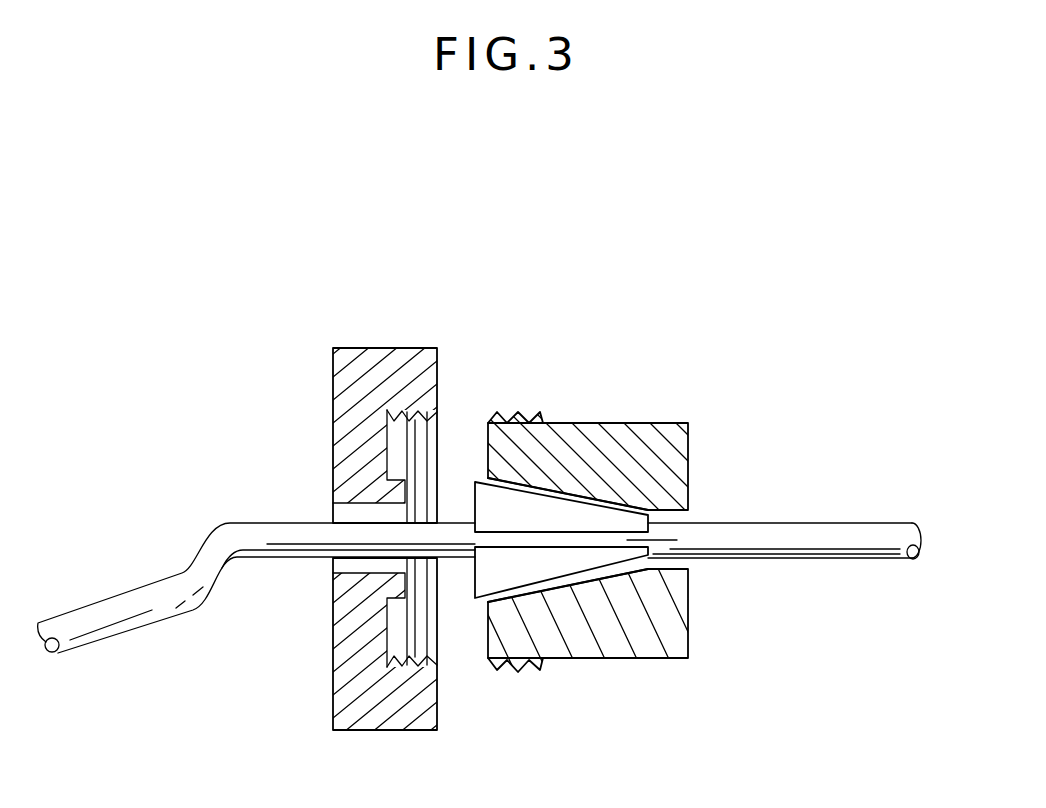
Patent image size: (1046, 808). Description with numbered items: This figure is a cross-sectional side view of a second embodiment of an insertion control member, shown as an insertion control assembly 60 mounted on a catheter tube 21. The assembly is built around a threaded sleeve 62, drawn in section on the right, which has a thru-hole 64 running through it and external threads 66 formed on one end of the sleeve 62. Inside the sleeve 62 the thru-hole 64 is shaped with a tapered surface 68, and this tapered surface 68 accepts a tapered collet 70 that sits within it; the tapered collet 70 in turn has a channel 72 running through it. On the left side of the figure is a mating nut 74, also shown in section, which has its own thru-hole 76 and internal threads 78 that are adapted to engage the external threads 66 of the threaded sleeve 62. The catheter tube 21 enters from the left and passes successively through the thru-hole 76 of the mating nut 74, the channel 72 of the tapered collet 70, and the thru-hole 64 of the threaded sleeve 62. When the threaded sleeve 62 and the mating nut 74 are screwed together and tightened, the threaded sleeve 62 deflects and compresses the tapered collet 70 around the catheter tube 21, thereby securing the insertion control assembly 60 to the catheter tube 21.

The catheter tube 21 is at (275, 543).
The insertion control assembly 60 is at (484, 272).
The threaded sleeve 62 is at (652, 432).
The thru-hole 64 is at (672, 518).
The external threads 66 is at (518, 667).
The tapered surface 68 is at (573, 587).
The tapered collet 70 is at (525, 513).
The channel 72 is at (655, 540).
The mating nut 74 is at (362, 370).
The thru-hole 76 is at (357, 517).
The internal threads 78 is at (438, 641).